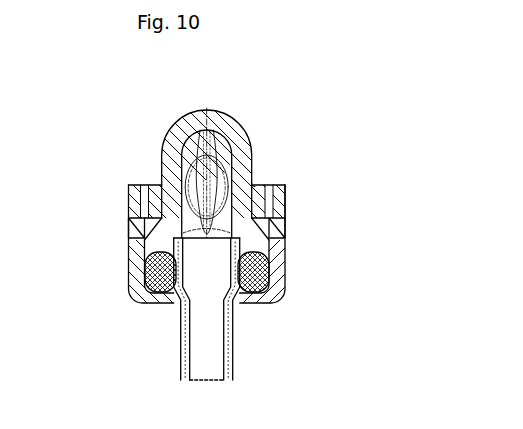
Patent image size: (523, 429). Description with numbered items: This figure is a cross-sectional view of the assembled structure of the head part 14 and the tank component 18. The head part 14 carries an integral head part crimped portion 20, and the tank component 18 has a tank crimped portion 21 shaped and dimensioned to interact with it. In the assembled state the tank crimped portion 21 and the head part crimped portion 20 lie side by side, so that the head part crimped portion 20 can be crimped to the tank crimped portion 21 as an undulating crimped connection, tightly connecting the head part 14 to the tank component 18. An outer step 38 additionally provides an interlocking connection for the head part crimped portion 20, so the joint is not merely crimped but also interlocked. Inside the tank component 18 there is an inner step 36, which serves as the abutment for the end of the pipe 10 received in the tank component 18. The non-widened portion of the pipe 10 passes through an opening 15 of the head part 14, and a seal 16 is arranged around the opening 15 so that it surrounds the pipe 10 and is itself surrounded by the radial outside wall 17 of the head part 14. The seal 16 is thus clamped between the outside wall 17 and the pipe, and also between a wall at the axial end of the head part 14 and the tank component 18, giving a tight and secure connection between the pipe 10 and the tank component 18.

The pipe 10 is at (234, 365).
The head part 14 is at (280, 253).
The opening 15 is at (182, 312).
The seal 16 is at (263, 273).
The radial outside wall 17 is at (132, 278).
The tank component 18 is at (230, 128).
The head part crimped portion 20 is at (263, 188).
The tank crimped portion 21 is at (254, 186).
The inner step 36 is at (232, 234).
The outer step 38 is at (284, 210).